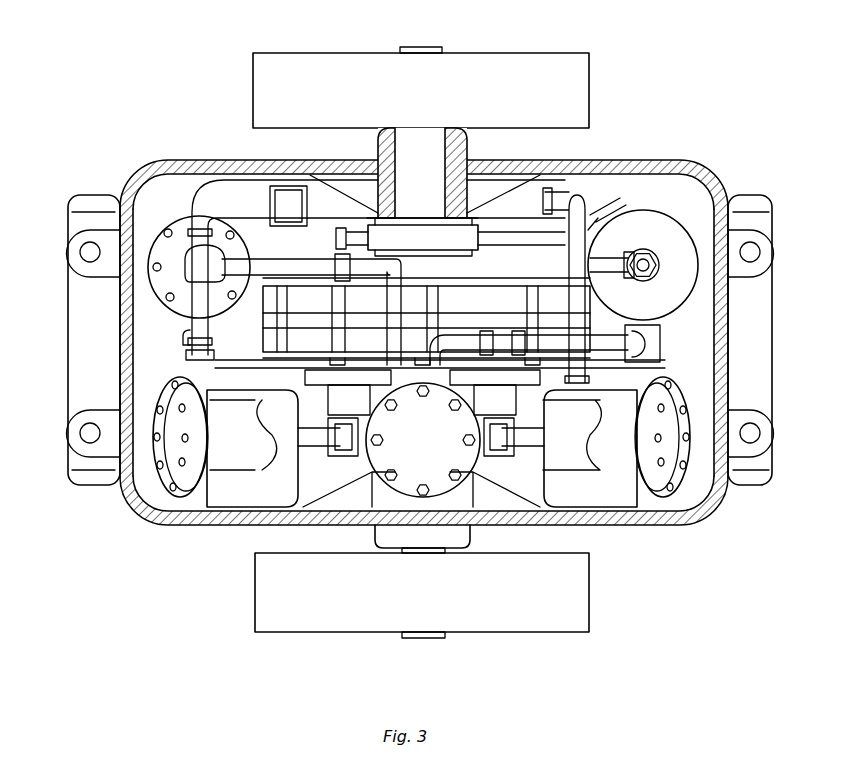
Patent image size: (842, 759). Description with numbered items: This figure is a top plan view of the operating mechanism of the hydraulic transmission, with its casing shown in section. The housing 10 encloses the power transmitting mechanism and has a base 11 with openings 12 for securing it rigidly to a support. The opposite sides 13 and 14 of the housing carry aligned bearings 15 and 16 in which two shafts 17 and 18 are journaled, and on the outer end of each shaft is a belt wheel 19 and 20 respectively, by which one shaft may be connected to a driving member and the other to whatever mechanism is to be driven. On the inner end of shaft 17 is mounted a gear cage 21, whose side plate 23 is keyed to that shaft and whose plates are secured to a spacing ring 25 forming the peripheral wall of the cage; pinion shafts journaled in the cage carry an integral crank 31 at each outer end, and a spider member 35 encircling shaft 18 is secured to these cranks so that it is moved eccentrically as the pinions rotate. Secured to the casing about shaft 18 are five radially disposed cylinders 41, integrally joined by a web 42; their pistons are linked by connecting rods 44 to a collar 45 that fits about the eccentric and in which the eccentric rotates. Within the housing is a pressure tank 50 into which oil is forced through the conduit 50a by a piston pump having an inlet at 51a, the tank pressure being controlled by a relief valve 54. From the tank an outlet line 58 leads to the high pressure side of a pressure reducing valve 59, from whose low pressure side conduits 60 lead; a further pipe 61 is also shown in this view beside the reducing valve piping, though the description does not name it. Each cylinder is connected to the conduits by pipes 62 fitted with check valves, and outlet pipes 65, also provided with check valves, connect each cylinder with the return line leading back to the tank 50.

The housing 10 is at (741, 202).
The base 11 is at (68, 339).
The openings 12 is at (80, 252).
The side of the housing 13 is at (636, 166).
The side of the housing 14 is at (656, 523).
The bearing 15 is at (468, 146).
The bearing 16 is at (452, 543).
The shaft 17 is at (430, 47).
The shaft 18 is at (436, 638).
The belt wheel 19 is at (552, 52).
The belt wheel 20 is at (589, 604).
The gear cage 21 is at (268, 368).
The side plate 23 is at (540, 280).
The spacing ring 25 is at (520, 300).
The crank 31 is at (305, 385).
The spider member 35 is at (543, 405).
The cylinders 41 is at (170, 405).
The web 42 is at (255, 462).
The connecting rods 44 is at (328, 448).
The collar 45 is at (375, 425).
The pressure tank 50 is at (643, 259).
The conduit 50a is at (512, 240).
The pump inlet 51a is at (352, 232).
The relief valve 54 is at (652, 250).
The outlet line 58 is at (262, 170).
The pressure reducing valve 59 is at (165, 215).
The conduits 60 is at (268, 262).
The vertical pipe 61 is at (540, 192).
The pipes 62 is at (192, 327).
The outlet pipes 65 is at (186, 356).